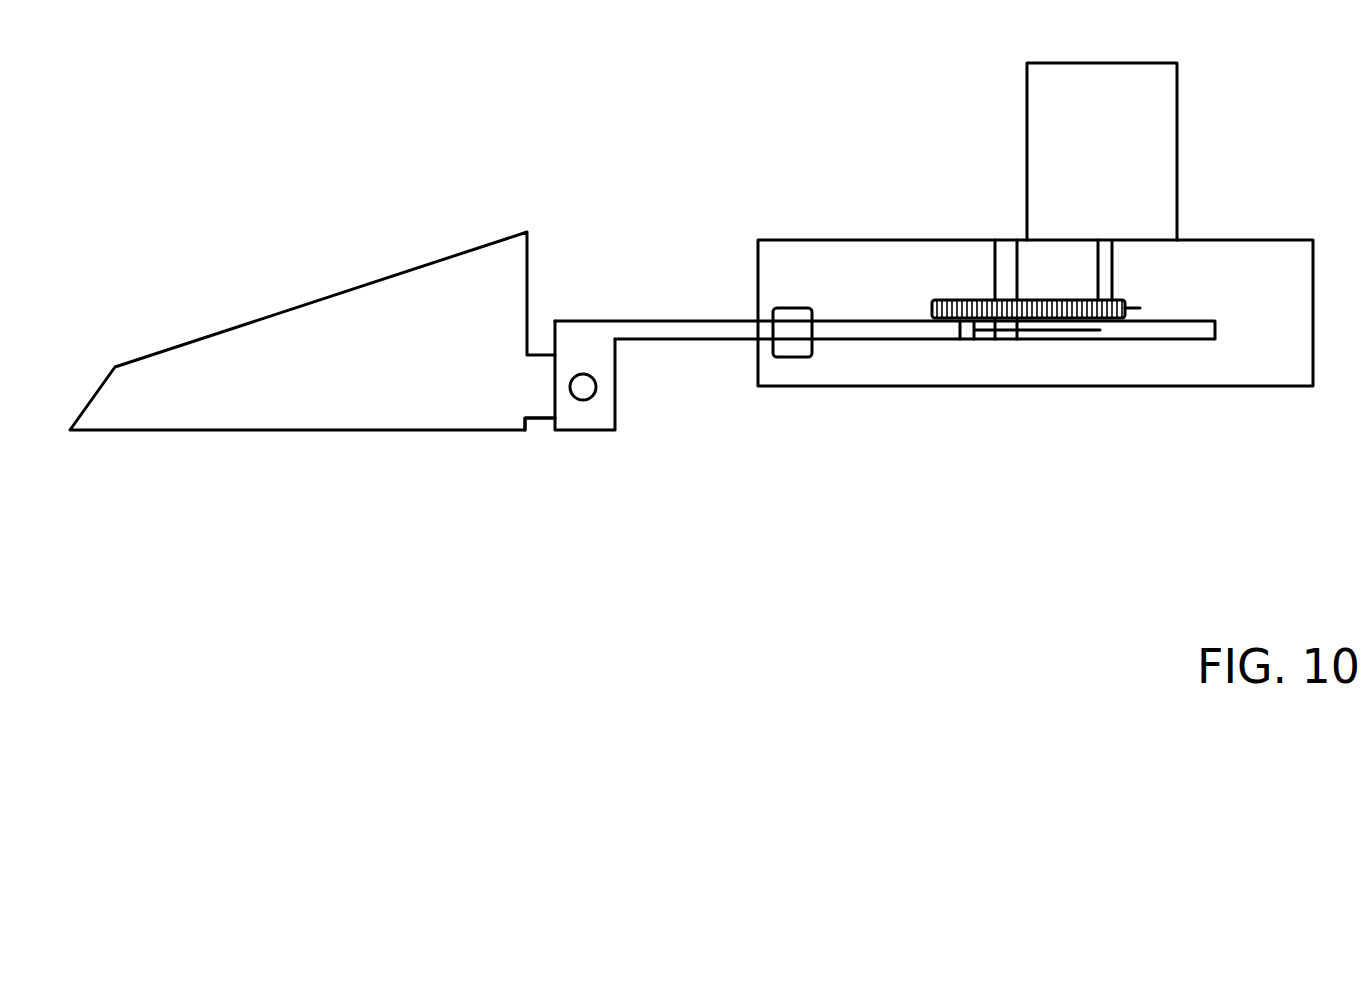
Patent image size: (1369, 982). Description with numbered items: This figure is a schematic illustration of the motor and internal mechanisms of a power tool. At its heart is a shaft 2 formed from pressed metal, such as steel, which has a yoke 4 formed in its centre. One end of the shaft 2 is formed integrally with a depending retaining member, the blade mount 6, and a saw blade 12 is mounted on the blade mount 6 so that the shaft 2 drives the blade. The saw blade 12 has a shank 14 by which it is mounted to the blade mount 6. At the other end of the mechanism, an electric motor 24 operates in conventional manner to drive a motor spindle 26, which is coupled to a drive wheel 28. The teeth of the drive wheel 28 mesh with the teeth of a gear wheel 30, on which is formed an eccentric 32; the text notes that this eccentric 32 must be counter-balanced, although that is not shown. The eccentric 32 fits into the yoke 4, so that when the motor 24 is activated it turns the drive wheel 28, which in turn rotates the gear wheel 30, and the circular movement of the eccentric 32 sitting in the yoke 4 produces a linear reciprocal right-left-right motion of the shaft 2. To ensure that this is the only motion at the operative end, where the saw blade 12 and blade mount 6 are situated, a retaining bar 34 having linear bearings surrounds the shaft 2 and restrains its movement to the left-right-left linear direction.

The shaft 2 is at (847, 332).
The yoke 4 is at (1028, 333).
The blade mount 6 is at (605, 395).
The saw blade 12 is at (325, 400).
The shank 14 is at (543, 395).
The electric motor 24 is at (1165, 85).
The motor spindle 26 is at (1103, 273).
The drive wheel 28 is at (1140, 308).
The gear wheel 30 is at (997, 300).
The eccentric 32 is at (990, 340).
The retaining bar 34 is at (783, 308).